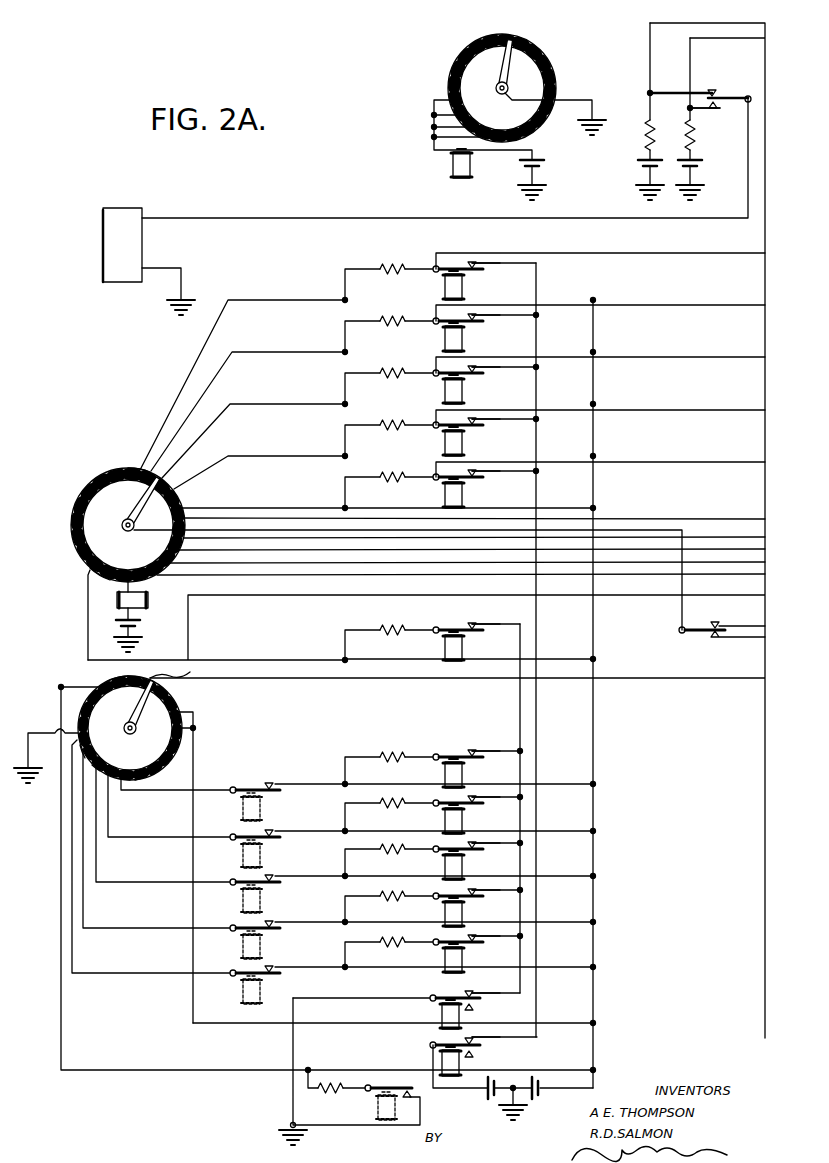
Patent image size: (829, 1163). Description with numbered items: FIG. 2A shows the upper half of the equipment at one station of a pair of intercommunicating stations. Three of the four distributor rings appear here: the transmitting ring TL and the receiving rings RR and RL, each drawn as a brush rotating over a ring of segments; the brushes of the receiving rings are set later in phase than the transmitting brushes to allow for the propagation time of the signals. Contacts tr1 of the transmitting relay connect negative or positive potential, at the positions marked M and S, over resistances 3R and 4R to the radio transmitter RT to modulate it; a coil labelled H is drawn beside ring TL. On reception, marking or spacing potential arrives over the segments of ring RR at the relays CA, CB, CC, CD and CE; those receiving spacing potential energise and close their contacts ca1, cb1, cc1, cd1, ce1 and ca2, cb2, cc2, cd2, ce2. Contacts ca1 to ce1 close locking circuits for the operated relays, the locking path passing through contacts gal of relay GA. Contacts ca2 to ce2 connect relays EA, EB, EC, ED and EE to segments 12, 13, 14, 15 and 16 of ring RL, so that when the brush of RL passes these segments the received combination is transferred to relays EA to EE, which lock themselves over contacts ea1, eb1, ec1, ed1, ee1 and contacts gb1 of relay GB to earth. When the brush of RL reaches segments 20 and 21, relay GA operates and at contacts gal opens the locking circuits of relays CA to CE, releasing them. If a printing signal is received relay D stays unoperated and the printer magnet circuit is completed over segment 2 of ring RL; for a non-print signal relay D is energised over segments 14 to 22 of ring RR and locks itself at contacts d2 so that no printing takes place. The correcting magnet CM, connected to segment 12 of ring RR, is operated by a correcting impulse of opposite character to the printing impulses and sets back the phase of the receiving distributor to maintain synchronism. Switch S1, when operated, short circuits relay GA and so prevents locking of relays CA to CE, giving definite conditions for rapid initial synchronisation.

The segment of distributor ring RL 2 is at (177, 669).
The distributor ring segment 12 is at (126, 776).
The distributor ring segment 13 is at (125, 776).
The distributor ring segment 14 is at (96, 570).
The distributor ring segment 15 is at (84, 756).
The distributor ring segment 16 is at (100, 768).
The distributor ring segment 20 is at (102, 700).
The distributor ring segment 21 is at (120, 690).
The distributor ring segment 22 is at (110, 488).
The radio transmitter RT is at (103, 238).
The distributor ring TL is at (519, 117).
The relay H is at (455, 165).
The resistance 3R is at (646, 126).
The resistance 4R is at (688, 124).
The switch contact M is at (700, 86).
The switch contact S is at (708, 114).
The contacts of transmitting relay tr1 is at (688, 121).
The receiving distributor ring RR is at (376, 564).
The receiving distributor ring RL is at (162, 874).
The correcting magnet CM is at (140, 605).
The relay CA is at (445, 288).
The relay CB is at (445, 340).
The relay CC is at (445, 392).
The relay CD is at (445, 444).
The relay CE is at (445, 496).
The relay contacts ca1 is at (480, 266).
The relay contacts cb1 is at (480, 318).
The relay contacts cc1 is at (480, 370).
The relay contacts cd1 is at (480, 422).
The relay contacts ce1 is at (480, 474).
The relay contacts ca2 is at (243, 806).
The relay contacts cb2 is at (243, 853).
The relay contacts cc2 is at (243, 898).
The relay contacts cd2 is at (243, 944).
The relay contacts ce2 is at (243, 989).
The relay D is at (445, 648).
The relay contacts d2 is at (480, 627).
The relay EA is at (445, 775).
The relay EB is at (445, 821).
The relay EC is at (445, 867).
The relay ED is at (445, 914).
The relay EE is at (445, 960).
The relay contacts ea1 is at (480, 754).
The relay contacts eb1 is at (480, 800).
The relay contacts ec1 is at (480, 846).
The relay contacts ed1 is at (480, 893).
The relay contacts ee1 is at (480, 939).
The relay GA is at (442, 1056).
The relay GB is at (442, 1009).
The relay contacts gal is at (482, 1035).
The relay contacts gb1 is at (482, 988).
The switch S1 is at (378, 1111).